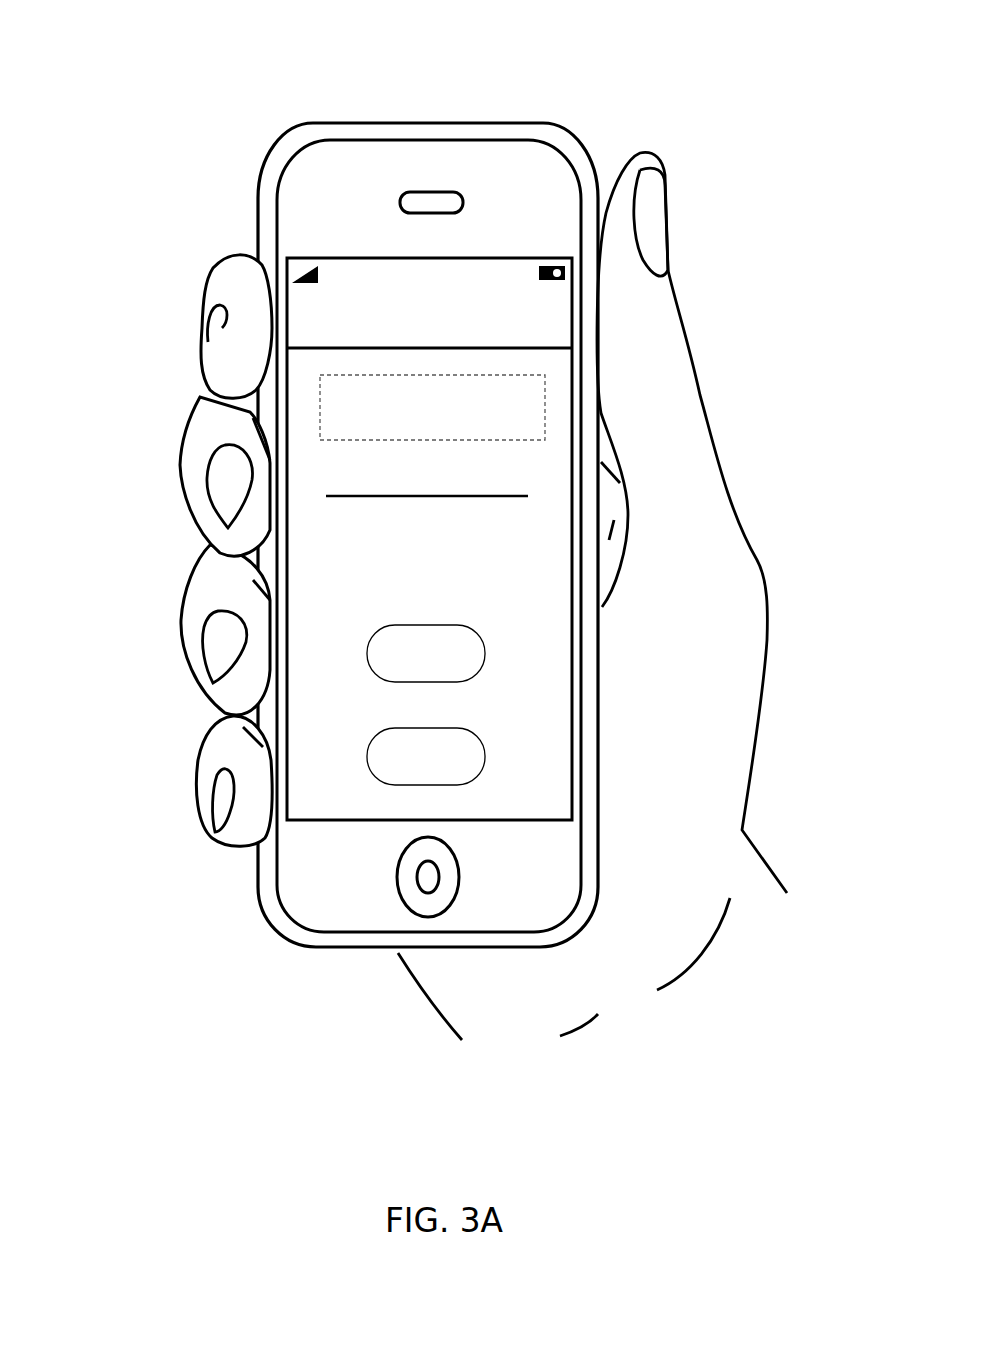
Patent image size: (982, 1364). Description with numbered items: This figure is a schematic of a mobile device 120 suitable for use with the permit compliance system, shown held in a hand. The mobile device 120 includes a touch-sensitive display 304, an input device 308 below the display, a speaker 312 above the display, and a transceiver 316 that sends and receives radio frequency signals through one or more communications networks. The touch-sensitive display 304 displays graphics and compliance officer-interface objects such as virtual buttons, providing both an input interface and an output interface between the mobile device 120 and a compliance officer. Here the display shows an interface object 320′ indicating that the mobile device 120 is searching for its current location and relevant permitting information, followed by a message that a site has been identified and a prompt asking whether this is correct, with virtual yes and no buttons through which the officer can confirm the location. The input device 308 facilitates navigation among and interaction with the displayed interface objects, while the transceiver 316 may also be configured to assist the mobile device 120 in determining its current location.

The mobile device 120 is at (453, 123).
The speaker 312 is at (402, 196).
The transceiver 316 is at (275, 268).
The touch-sensitive display 304 is at (603, 697).
The interface object 320′ is at (574, 405).
The input device 308 is at (448, 877).